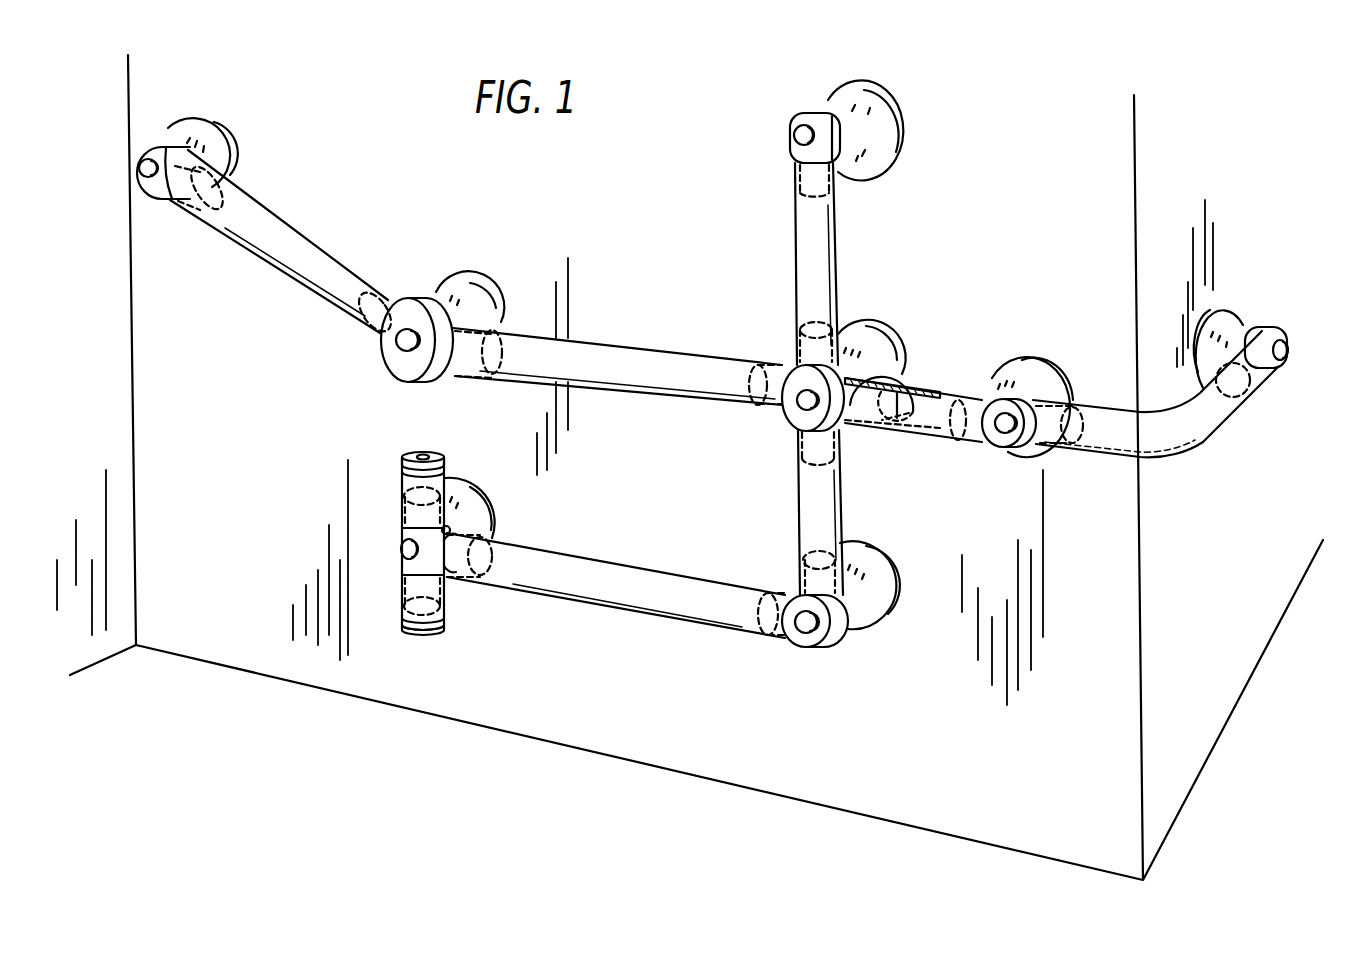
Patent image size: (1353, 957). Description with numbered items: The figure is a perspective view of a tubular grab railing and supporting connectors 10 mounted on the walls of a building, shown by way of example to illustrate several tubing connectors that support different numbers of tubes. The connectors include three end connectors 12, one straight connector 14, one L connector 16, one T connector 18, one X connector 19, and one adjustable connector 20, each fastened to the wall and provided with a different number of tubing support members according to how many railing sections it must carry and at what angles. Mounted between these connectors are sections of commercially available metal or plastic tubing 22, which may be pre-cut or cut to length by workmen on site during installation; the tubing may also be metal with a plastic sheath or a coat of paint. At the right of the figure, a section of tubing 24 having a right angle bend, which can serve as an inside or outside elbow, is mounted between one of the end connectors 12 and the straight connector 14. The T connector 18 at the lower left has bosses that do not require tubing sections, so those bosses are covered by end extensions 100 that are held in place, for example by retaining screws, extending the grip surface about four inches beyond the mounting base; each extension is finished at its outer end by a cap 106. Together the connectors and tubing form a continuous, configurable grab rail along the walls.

The tubular grab railing and supporting connectors 10 is at (706, 150).
The end connector 12 is at (150, 140).
The straight connector 14 is at (1012, 388).
The L connector 16 is at (826, 650).
The T connector 18 is at (395, 530).
The X connector 19 is at (783, 362).
The adjustable connector 20 is at (408, 292).
The tubing 22 is at (311, 245).
The section of tubing having a right angle bend 24 is at (1173, 448).
The end extension 100 is at (447, 471).
The end cap 106 is at (403, 455).